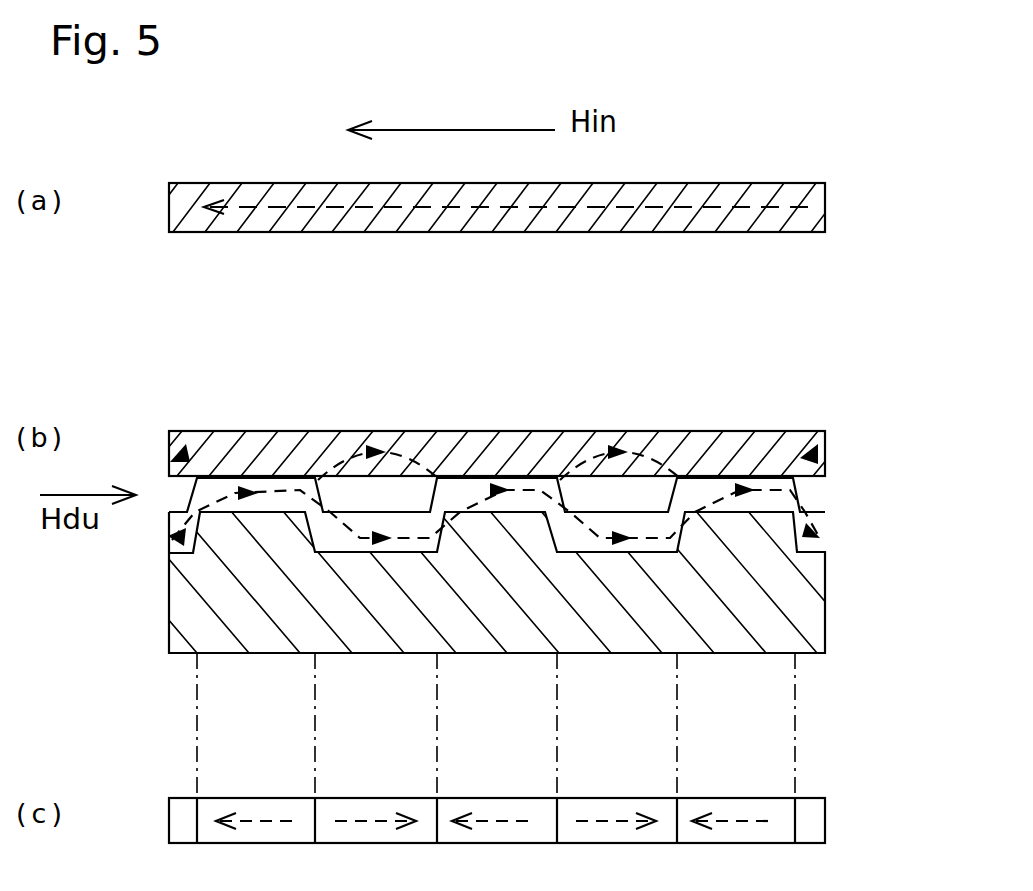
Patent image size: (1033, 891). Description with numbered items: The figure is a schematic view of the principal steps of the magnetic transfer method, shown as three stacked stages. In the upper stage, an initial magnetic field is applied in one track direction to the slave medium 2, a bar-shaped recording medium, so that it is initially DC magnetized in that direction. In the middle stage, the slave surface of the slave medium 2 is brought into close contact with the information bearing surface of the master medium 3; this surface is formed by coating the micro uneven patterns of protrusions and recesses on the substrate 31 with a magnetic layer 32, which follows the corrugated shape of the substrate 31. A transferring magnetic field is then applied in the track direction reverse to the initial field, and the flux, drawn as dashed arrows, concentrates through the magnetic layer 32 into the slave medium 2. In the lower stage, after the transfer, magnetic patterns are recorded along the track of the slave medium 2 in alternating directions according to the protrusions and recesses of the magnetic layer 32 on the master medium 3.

The slave medium 2 is at (775, 185).
The master medium 3 is at (825, 598).
The substrate 31 is at (481, 653).
The magnetic layer 32 is at (512, 483).